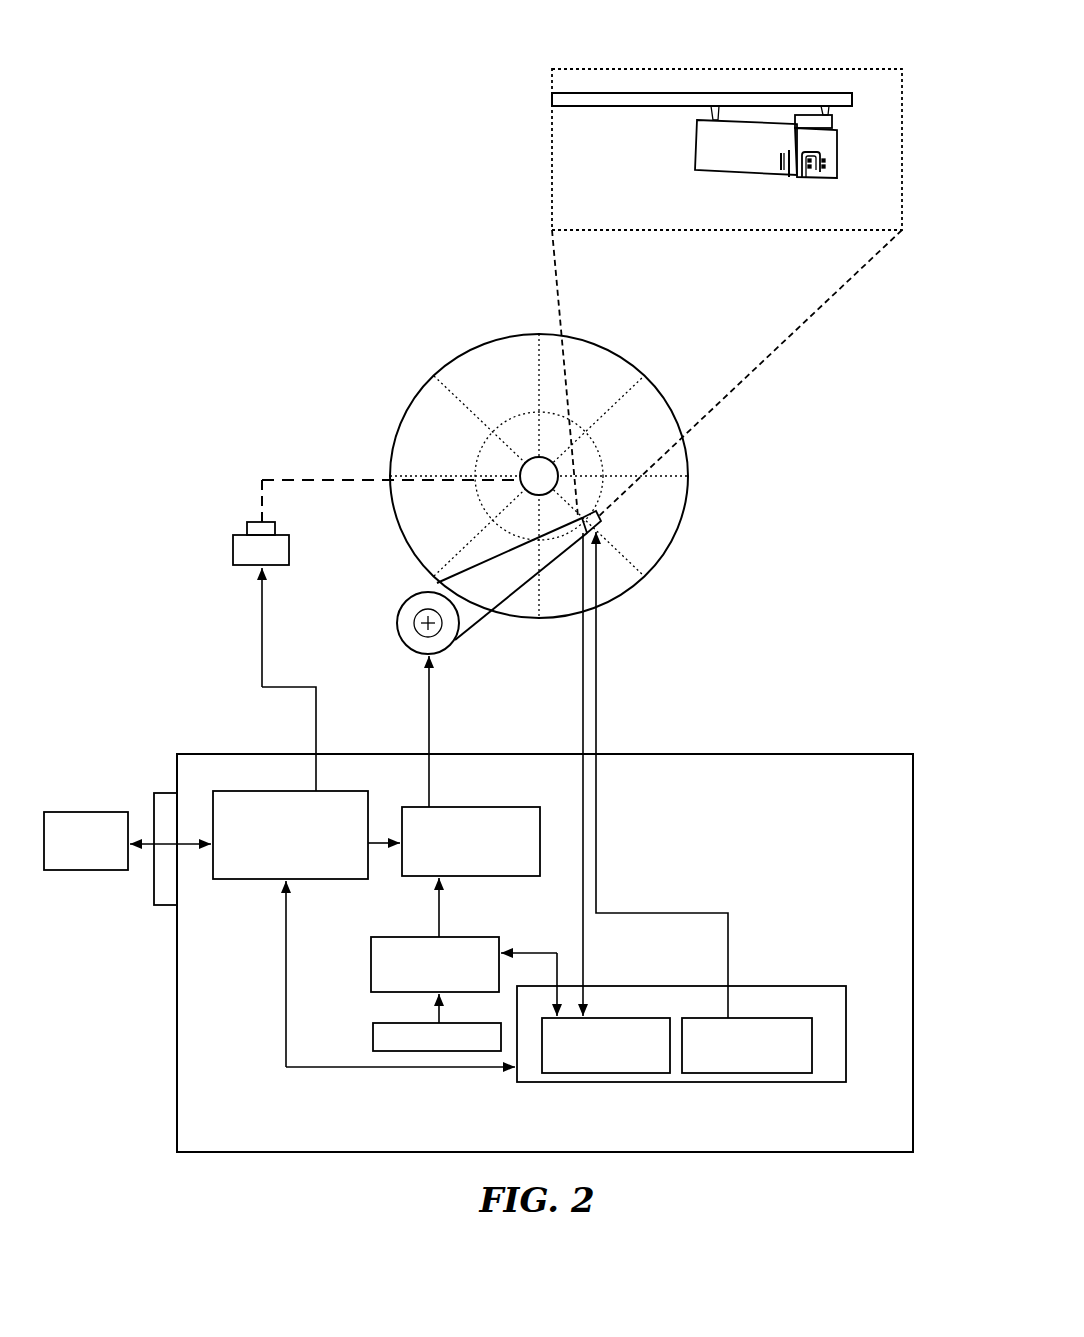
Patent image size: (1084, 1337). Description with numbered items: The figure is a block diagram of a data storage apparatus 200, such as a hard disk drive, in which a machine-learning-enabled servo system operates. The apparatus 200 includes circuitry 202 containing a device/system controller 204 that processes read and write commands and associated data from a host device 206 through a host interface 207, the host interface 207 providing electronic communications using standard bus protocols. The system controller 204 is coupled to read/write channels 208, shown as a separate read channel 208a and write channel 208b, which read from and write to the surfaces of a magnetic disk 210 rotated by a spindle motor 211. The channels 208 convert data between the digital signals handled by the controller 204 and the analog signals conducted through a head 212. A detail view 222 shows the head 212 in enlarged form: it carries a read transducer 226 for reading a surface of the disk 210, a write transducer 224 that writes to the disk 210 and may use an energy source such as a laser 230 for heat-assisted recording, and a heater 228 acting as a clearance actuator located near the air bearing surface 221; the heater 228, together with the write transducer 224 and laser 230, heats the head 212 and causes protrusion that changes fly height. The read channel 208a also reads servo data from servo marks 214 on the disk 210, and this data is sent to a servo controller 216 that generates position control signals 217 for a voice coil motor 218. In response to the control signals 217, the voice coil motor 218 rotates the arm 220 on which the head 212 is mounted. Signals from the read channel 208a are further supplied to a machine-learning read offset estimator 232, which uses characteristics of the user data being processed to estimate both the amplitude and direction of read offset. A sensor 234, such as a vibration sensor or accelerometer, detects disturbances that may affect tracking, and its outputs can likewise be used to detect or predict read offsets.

The data storage apparatus 200 is at (198, 479).
The circuitry 202 is at (182, 754).
The device/system controller 204 is at (246, 791).
The host device 206 is at (82, 812).
The host interface 207 is at (154, 905).
The read/write channels 208 is at (694, 1082).
The read channel 208a is at (594, 1073).
The write channel 208b is at (776, 1073).
The magnetic disk 210 is at (437, 363).
The spindle motor 211 is at (233, 550).
The head 212 is at (837, 140).
The servo marks 214 is at (440, 392).
The servo controller 216 is at (492, 807).
The position control signals 217 is at (429, 720).
The voice coil motor 218 is at (397, 625).
The arm 220 is at (560, 92).
The air bearing surface 221 is at (817, 178).
The detail view 222 is at (552, 155).
The write transducer 224 is at (826, 170).
The read transducer 226 is at (782, 171).
The heater 228 is at (788, 178).
The laser 230 is at (808, 116).
The machine-learning read offset estimator 232 is at (390, 937).
The sensor 234 is at (373, 1034).